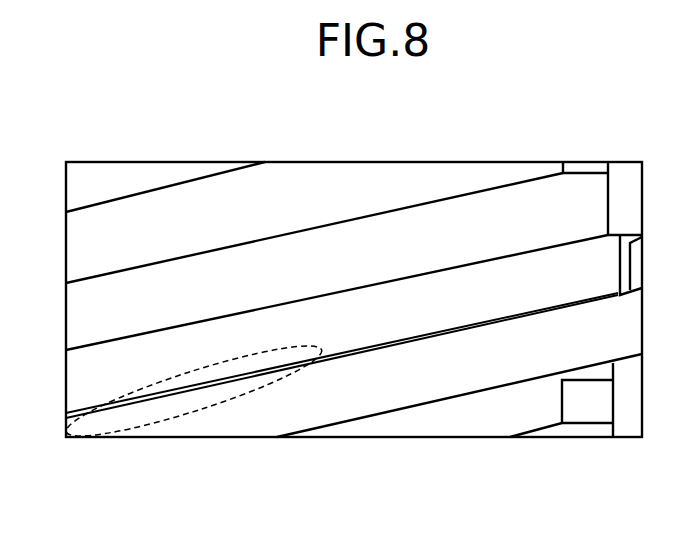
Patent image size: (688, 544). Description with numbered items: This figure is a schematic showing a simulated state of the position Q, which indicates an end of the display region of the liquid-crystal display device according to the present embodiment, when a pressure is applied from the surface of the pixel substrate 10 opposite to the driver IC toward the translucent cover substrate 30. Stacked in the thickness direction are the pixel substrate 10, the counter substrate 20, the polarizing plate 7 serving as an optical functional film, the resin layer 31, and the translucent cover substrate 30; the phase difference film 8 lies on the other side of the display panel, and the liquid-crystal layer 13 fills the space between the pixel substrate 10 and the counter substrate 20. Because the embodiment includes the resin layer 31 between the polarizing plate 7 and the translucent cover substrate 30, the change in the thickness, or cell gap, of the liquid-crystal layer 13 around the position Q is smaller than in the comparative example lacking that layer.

The polarizing plate 7 is at (92, 313).
The phase difference film 8 is at (482, 420).
The pixel substrate 10 is at (430, 382).
The liquid-crystal layer 13 is at (357, 353).
The counter substrate 20 is at (380, 323).
The translucent cover substrate 30 is at (131, 175).
The resin layer 31 is at (337, 178).
The position Q is at (190, 415).